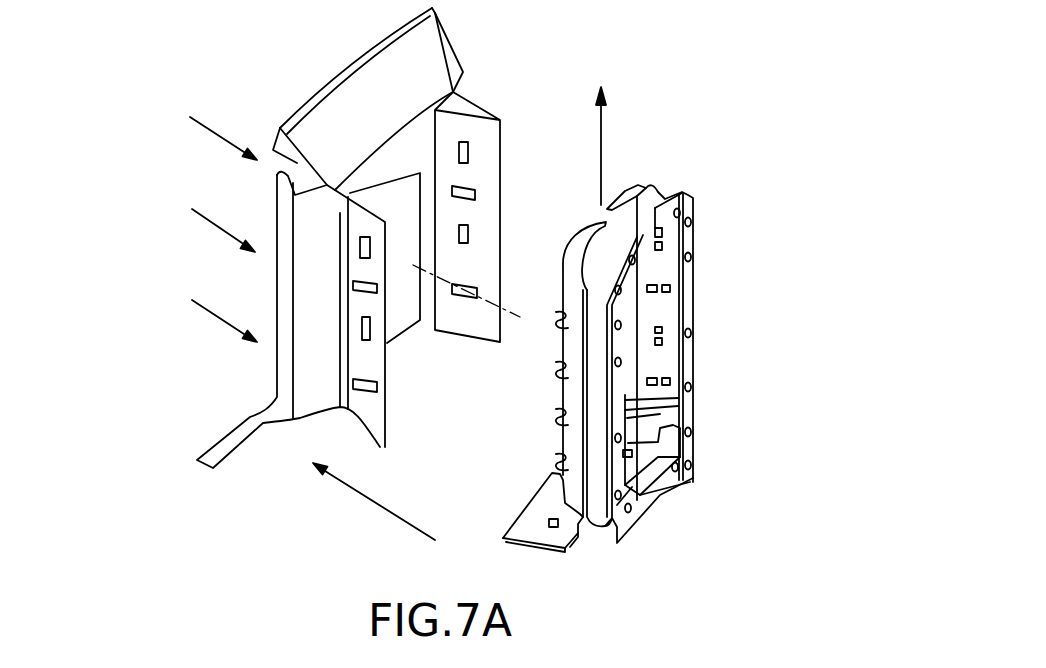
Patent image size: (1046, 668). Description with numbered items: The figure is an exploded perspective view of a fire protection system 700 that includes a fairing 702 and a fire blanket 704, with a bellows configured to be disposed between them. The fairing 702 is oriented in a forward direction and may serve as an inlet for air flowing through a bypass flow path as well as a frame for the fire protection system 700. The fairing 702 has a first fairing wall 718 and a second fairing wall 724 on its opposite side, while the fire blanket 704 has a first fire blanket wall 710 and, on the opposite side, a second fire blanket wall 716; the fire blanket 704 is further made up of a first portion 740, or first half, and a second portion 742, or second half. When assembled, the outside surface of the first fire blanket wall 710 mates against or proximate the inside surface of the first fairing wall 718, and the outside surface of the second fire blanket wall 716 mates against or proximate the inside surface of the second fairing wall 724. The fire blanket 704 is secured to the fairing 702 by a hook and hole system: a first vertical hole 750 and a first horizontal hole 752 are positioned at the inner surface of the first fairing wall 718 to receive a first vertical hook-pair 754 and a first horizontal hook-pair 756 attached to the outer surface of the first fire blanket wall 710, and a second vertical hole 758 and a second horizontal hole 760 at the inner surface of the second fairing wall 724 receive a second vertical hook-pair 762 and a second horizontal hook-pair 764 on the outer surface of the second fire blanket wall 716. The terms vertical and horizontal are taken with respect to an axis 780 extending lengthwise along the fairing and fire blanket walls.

The fire protection system 700 is at (176, 65).
The fairing 702 is at (430, 62).
The fire blanket 704 is at (692, 203).
The first fire blanket wall 710 is at (562, 445).
The second fire blanket wall 716 is at (668, 362).
The first fairing wall 718 is at (368, 398).
The second fairing wall 724 is at (488, 128).
The first portion 740 is at (633, 517).
The second portion 742 is at (682, 458).
The first vertical hole 750 is at (364, 340).
The first horizontal hole 752 is at (372, 288).
The first vertical hook-pair 754 is at (562, 410).
The first horizontal hook-pair 756 is at (562, 362).
The second vertical hole 758 is at (468, 238).
The second horizontal hole 760 is at (468, 196).
The second vertical hook-pair 762 is at (657, 327).
The second horizontal hook-pair 764 is at (670, 290).
The axis 780 is at (603, 140).